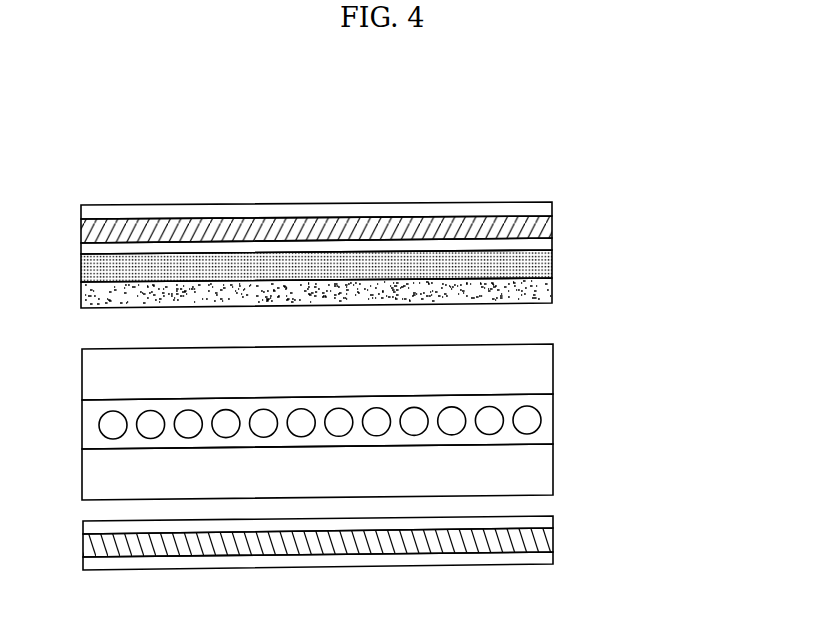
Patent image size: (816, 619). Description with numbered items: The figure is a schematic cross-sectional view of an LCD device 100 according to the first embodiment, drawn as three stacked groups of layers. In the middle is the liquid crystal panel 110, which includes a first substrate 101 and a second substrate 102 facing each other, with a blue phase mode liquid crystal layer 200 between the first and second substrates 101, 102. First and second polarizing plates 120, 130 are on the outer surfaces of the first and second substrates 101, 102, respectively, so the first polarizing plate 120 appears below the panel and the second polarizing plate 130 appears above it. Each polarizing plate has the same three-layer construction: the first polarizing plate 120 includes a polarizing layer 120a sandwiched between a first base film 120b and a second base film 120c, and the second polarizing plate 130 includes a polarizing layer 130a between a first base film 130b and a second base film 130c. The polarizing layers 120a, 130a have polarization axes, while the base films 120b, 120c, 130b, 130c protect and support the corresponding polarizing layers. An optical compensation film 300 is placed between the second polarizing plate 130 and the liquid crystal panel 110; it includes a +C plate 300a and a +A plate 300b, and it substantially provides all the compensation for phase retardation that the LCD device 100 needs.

The LCD device 100 is at (522, 142).
The liquid crystal panel 110 is at (647, 371).
The first substrate 101 is at (542, 464).
The second substrate 102 is at (540, 361).
The blue phase mode liquid crystal layer 200 is at (548, 413).
The second polarizing plate 130 is at (657, 185).
The polarizing layer 130a is at (538, 226).
The first base film 130b is at (538, 207).
The second base film 130c is at (538, 245).
The optical compensation film 300 is at (658, 279).
The +C plate 300a is at (538, 267).
The +A plate 300b is at (538, 293).
The first polarizing plate 120 is at (662, 514).
The polarizing layer 120a is at (544, 539).
The first base film 120b is at (540, 522).
The second base film 120c is at (544, 559).